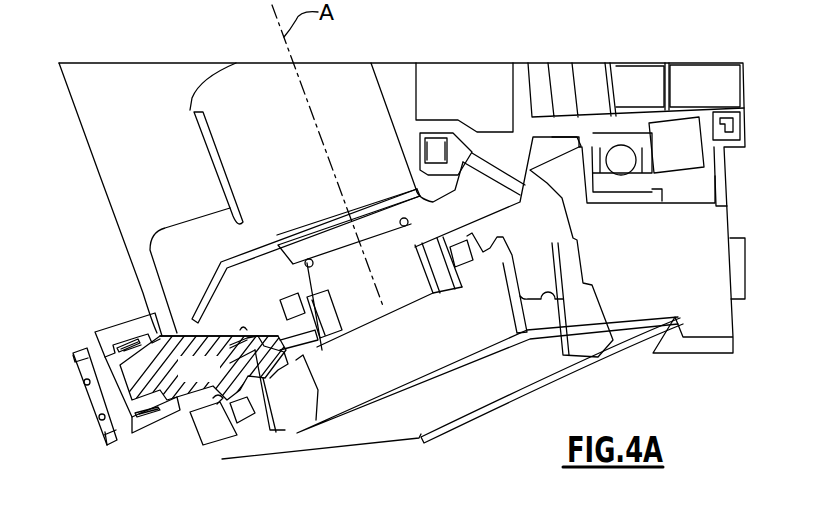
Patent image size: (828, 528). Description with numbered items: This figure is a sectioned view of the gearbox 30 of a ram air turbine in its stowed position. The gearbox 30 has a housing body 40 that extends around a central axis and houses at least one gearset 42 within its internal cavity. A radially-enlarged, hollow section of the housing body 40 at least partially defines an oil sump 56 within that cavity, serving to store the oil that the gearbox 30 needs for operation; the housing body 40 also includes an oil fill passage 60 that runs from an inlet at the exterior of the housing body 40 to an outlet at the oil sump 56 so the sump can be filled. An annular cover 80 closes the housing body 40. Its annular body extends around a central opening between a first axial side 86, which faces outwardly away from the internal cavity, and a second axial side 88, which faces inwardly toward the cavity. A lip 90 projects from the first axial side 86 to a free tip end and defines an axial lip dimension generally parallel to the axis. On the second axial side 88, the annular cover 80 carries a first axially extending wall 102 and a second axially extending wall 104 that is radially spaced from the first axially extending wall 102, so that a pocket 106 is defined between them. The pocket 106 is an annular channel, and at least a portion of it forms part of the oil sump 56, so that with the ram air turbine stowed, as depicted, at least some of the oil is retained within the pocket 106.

The gearbox 30 is at (748, 211).
The housing body 40 is at (90, 150).
The gearset 42 is at (247, 286).
The oil sump 56 is at (150, 332).
The oil fill passage 60 is at (262, 332).
The annular cover 80 is at (375, 442).
The first axial side 86 is at (250, 462).
The second axial side 88 is at (557, 292).
The lip 90 is at (434, 407).
The first axially extending wall 102 is at (270, 378).
The second axially extending wall 104 is at (217, 402).
The pocket 106 is at (280, 455).